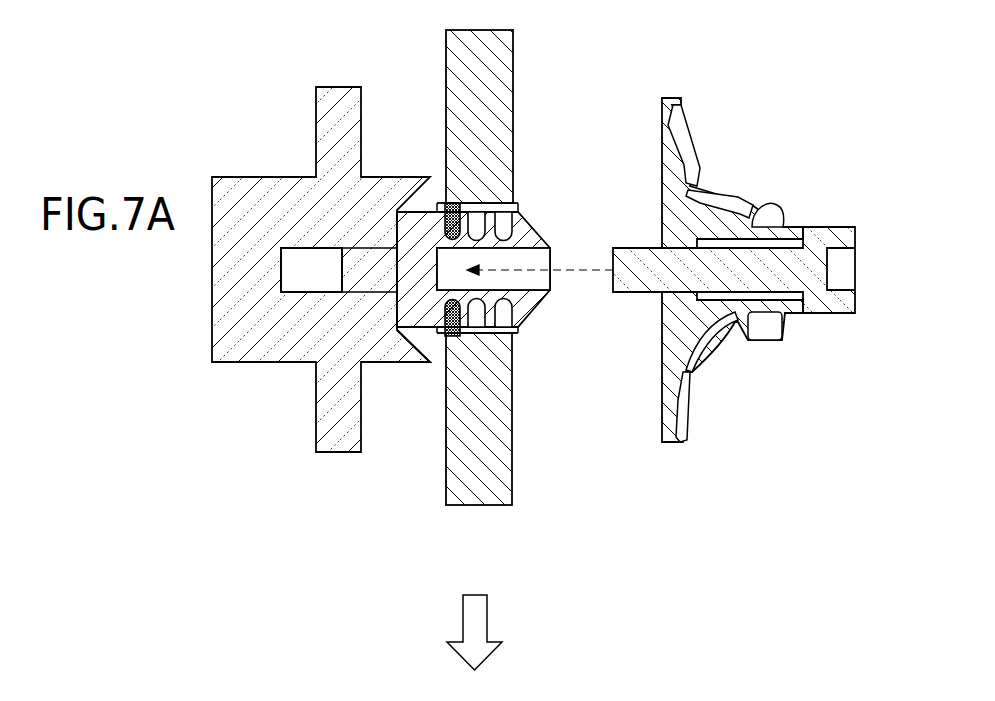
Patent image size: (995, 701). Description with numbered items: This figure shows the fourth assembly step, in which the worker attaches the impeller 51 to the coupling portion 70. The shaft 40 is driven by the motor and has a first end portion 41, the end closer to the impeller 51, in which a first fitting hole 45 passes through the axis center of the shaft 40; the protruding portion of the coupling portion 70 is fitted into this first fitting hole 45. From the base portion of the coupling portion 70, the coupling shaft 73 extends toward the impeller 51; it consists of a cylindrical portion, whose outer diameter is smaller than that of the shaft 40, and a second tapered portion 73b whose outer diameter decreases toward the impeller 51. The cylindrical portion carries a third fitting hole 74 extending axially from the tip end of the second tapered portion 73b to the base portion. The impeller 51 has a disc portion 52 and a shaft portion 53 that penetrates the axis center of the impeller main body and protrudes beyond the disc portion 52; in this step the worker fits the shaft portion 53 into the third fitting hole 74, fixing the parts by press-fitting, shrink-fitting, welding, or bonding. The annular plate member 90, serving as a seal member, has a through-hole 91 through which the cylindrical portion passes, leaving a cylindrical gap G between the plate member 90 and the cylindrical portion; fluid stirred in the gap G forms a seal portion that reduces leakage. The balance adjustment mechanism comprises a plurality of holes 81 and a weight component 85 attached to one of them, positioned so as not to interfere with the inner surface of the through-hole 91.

The shaft 40 is at (273, 127).
The first end portion 41 is at (425, 365).
The first fitting hole 45 is at (320, 272).
The impeller 51 is at (762, 182).
The disc portion 52 is at (690, 158).
The shaft portion 53 is at (632, 262).
The coupling portion 70 is at (547, 205).
The coupling shaft 73 is at (520, 205).
The second tapered portion 73b is at (527, 320).
The third fitting hole 74 is at (553, 292).
The holes 81 is at (465, 330).
The weight component 85 is at (445, 205).
The plate member 90 is at (514, 470).
The through-hole 91 is at (516, 195).
The gap G is at (474, 200).